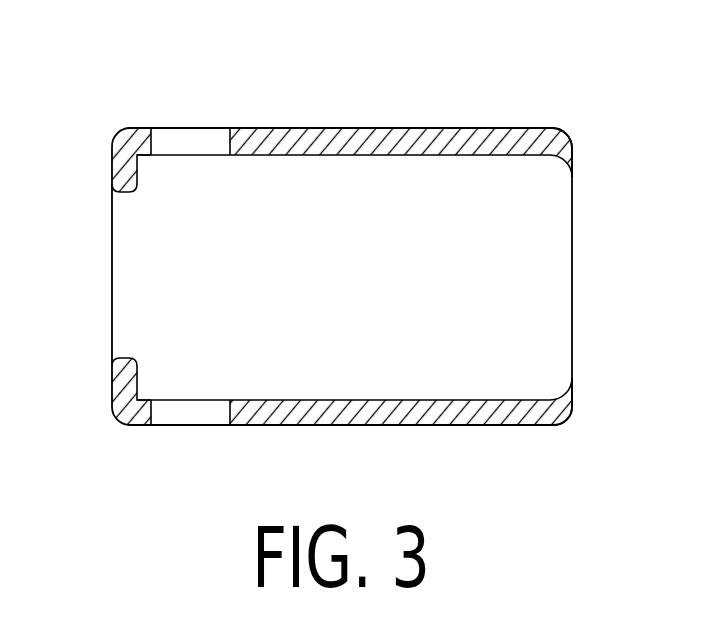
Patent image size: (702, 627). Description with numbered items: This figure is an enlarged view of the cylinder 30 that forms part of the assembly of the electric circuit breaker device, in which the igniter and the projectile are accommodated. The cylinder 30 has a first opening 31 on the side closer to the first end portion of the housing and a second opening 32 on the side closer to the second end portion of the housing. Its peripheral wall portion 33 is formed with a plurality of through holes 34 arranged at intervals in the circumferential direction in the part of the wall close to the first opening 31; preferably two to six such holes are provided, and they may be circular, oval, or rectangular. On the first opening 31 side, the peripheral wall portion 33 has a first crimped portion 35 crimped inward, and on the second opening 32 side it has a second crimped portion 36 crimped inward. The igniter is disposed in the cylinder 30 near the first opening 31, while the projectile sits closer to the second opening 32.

The cylinder 30 is at (340, 255).
The first opening 31 is at (122, 357).
The second opening 32 is at (558, 390).
The peripheral wall portion 33 is at (142, 128).
The through holes 34 is at (232, 408).
The first crimped portion 35 is at (120, 172).
The second crimped portion 36 is at (574, 155).